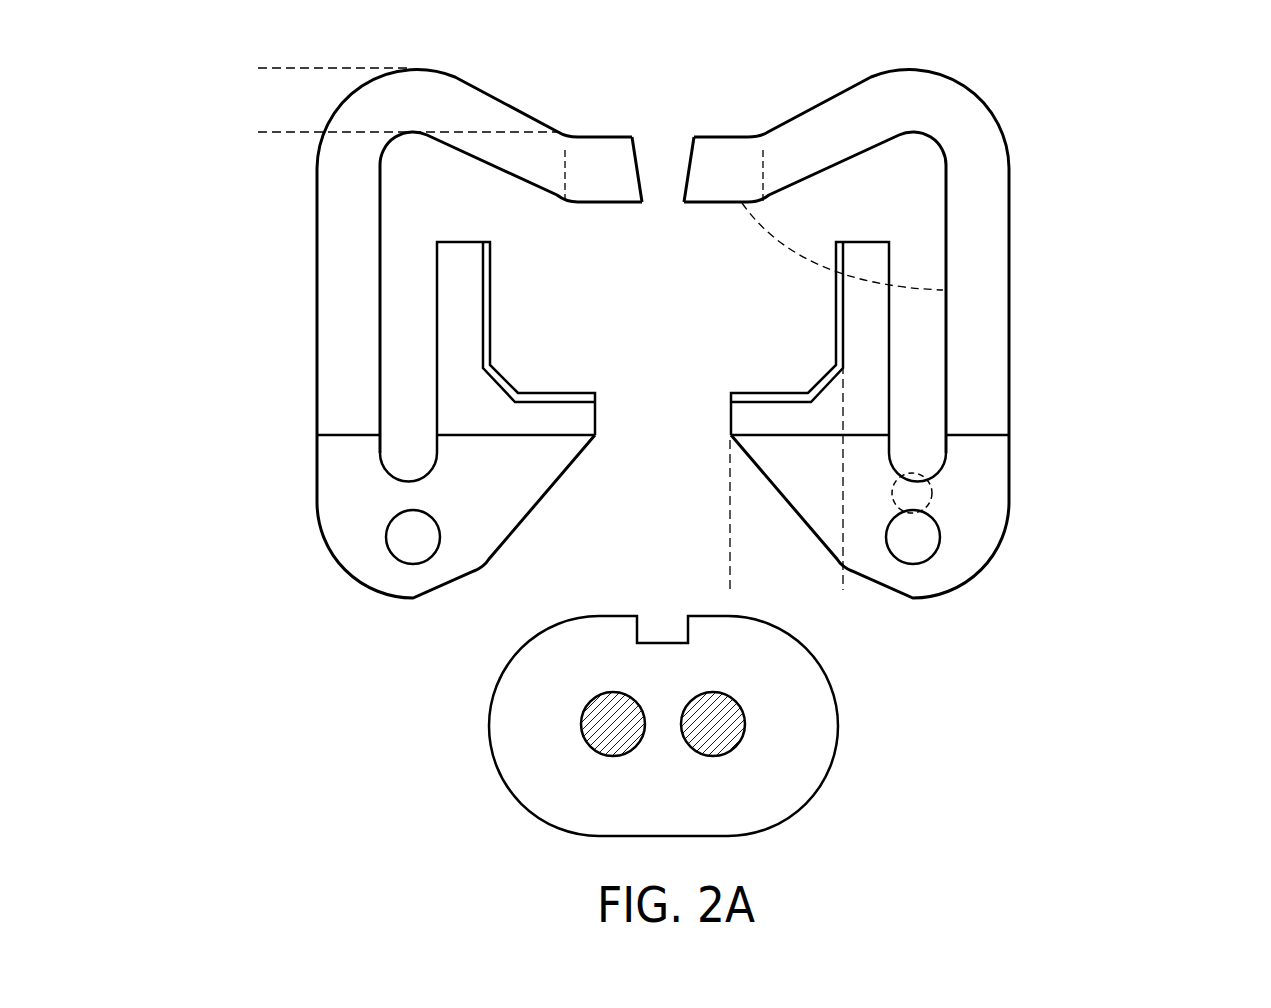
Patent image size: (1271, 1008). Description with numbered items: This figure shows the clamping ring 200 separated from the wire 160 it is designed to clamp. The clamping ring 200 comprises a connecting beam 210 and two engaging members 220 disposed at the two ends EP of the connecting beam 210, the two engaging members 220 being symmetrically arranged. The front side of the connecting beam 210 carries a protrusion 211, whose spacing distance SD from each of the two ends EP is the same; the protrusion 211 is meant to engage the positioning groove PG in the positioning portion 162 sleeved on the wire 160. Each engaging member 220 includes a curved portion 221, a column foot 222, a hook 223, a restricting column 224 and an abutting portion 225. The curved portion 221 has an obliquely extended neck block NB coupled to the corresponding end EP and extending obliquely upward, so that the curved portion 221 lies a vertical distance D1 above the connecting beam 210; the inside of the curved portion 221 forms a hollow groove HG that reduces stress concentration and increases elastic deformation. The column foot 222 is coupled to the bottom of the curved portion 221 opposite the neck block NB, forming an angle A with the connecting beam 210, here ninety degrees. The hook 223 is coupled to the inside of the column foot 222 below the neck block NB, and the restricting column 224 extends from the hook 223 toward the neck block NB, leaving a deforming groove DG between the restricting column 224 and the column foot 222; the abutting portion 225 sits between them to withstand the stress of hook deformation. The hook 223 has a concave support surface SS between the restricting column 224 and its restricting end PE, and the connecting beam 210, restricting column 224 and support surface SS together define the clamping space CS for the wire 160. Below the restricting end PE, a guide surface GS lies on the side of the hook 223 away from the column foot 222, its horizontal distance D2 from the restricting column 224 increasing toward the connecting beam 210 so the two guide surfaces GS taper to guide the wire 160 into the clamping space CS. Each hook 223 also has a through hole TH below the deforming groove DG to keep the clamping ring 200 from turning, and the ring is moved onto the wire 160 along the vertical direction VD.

The clamping ring 200 is at (1238, 692).
The connecting beam 210 is at (712, 137).
The protrusion 211 is at (665, 155).
The engaging members 220 is at (656, 336).
The curved portion 221 is at (408, 107).
The column foot 222 is at (983, 284).
The hook 223 is at (353, 530).
The restricting column 224 is at (863, 313).
The abutting portion 225 is at (913, 495).
The wire 160 is at (650, 835).
The positioning portion 162 is at (807, 716).
The vertical direction VD is at (107, 80).
The vertical distance D1 is at (267, 69).
The horizontal distance D2 is at (842, 580).
The spacing distance SD is at (631, 162).
The ends EP is at (565, 176).
The neck block NB is at (482, 145).
The clamping space CS is at (540, 243).
The hollow groove HG is at (918, 160).
The deforming groove DG is at (918, 387).
The angle A is at (812, 250).
The restricting end PE is at (730, 415).
The support surface SS is at (507, 377).
The guide surface GS is at (520, 527).
The through hole TH is at (433, 560).
The positioning groove PG is at (663, 636).